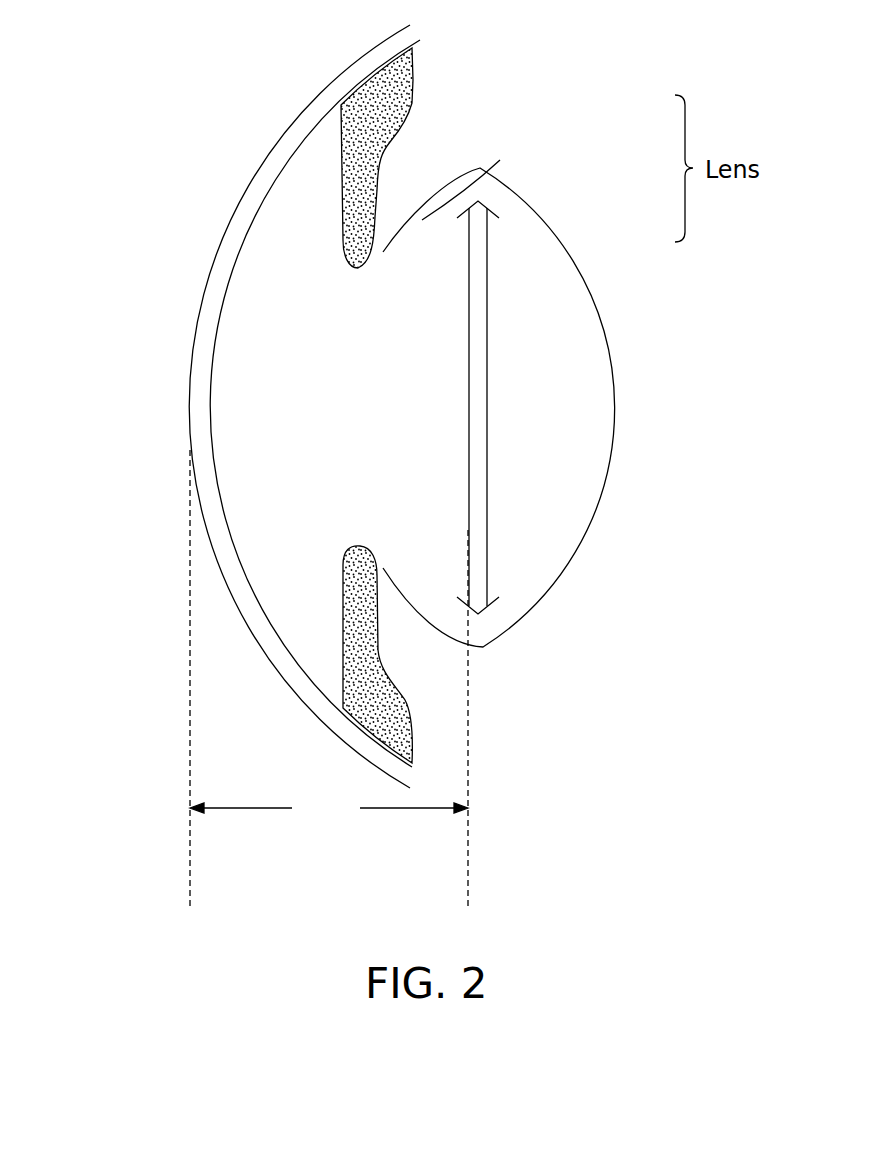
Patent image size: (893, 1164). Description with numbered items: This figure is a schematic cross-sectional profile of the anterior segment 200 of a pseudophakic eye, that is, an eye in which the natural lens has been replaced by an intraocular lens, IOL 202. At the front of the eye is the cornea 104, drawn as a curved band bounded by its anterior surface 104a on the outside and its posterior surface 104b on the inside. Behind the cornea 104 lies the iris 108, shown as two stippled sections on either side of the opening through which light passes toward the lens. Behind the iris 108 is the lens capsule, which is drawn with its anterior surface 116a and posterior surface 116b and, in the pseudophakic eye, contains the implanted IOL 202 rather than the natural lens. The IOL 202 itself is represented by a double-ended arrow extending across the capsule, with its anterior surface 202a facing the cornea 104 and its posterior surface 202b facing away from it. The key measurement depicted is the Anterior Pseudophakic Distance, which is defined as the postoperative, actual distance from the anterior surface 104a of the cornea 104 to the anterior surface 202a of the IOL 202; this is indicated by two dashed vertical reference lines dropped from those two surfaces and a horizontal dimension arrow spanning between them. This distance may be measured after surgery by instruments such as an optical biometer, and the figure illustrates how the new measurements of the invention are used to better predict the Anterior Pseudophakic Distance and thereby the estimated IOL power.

The cornea 104 is at (228, 406).
The anterior surface of the cornea 104a is at (197, 310).
The posterior surface of the cornea 104b is at (218, 347).
The iris 108 is at (345, 186).
The anterior surface of the lens capsule 116a is at (500, 160).
The posterior surface of the lens capsule 116b is at (523, 187).
The anterior segment of a pseudophakic eye 200 is at (543, 786).
The IOL 202 is at (512, 407).
The anterior surface of the IOL 202a is at (468, 470).
The posterior surface of the IOL 202b is at (489, 273).